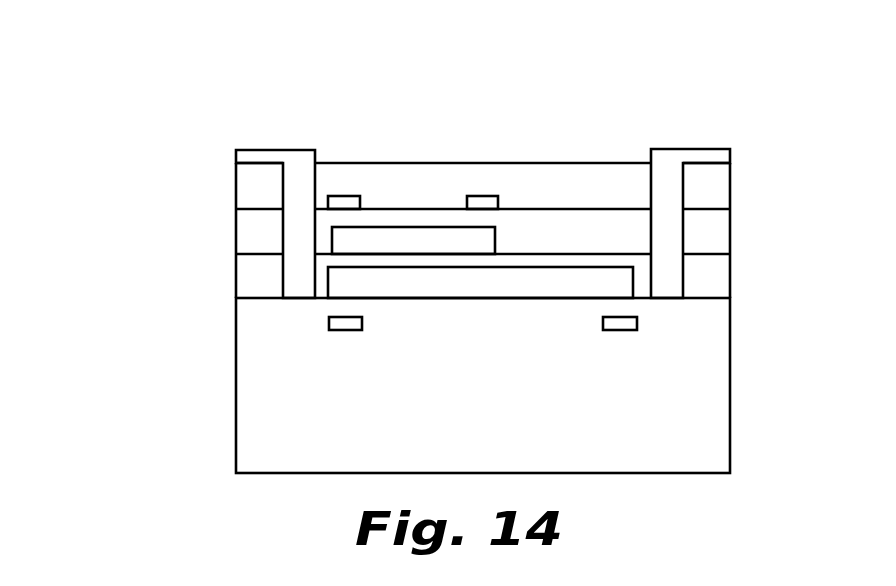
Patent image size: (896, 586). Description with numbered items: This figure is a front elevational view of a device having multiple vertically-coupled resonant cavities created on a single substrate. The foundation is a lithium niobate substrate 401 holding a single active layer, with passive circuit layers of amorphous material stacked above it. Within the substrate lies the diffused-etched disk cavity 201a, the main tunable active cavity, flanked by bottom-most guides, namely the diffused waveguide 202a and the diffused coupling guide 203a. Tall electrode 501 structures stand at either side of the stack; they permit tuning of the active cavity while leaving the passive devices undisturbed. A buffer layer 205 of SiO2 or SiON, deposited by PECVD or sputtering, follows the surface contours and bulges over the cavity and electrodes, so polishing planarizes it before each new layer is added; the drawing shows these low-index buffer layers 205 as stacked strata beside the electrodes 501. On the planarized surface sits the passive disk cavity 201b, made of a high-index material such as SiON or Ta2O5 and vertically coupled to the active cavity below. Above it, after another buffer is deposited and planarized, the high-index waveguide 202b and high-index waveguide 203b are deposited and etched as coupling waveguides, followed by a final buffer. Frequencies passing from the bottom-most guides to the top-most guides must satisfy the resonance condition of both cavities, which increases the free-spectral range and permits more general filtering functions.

The LiNbO3 substrate 401 is at (483, 385).
The buffer layer 205 is at (232, 268).
The electrode 501 is at (783, 103).
The disk cavity 201b is at (402, 227).
The high-index waveguide 202b is at (347, 196).
The high-index waveguide 203b is at (474, 196).
The diffused-etched disk cavity 201a is at (457, 300).
The diffused waveguide 202a is at (333, 329).
The diffused coupling guide 203a is at (613, 330).